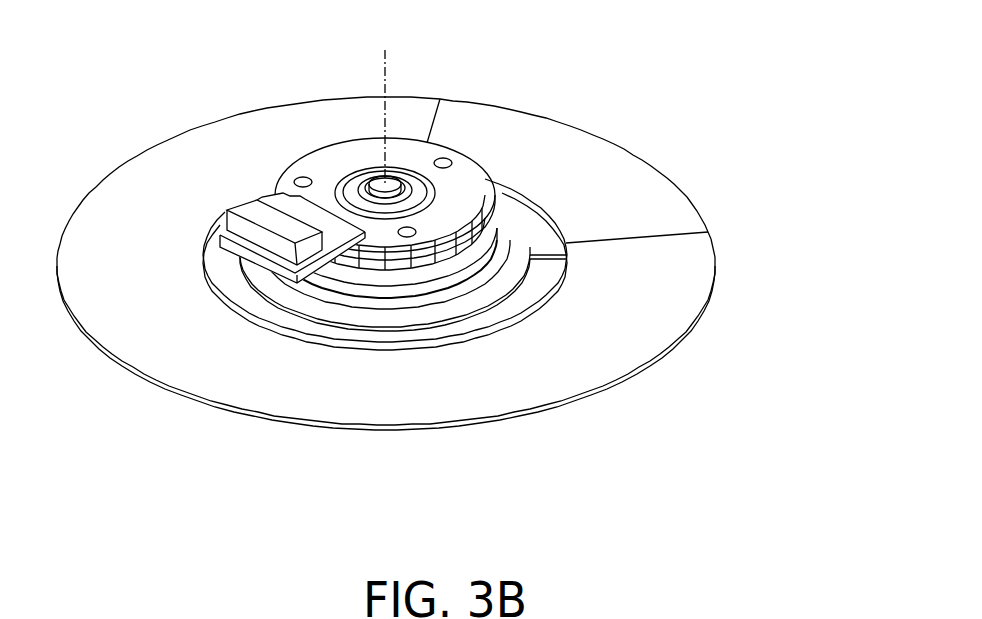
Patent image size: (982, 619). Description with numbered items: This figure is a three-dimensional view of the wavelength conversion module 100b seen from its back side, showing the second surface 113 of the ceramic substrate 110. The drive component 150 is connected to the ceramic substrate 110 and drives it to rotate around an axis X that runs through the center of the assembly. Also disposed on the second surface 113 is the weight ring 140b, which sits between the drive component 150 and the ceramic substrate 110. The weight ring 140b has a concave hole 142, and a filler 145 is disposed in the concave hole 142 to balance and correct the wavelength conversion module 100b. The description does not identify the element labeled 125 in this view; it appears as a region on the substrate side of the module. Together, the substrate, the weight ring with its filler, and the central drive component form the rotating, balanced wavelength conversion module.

The wavelength conversion module 100b is at (424, 273).
The ceramic substrate 110 is at (403, 393).
The second surface 113 is at (324, 396).
The sector plate 125 is at (540, 143).
The weight ring 140b is at (292, 336).
The concave hole 142 is at (532, 271).
The filler 145 is at (540, 232).
The drive component 150 is at (433, 287).